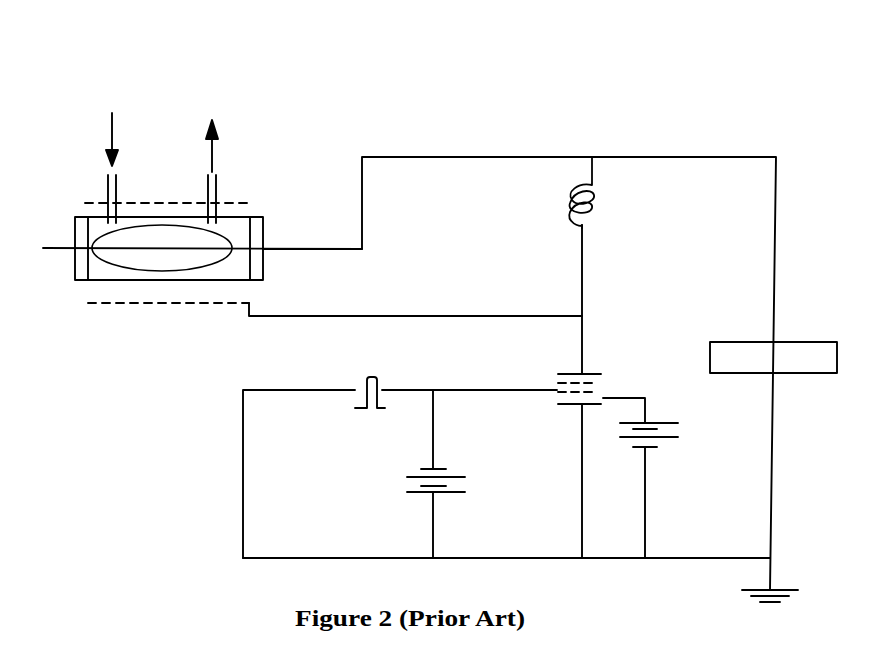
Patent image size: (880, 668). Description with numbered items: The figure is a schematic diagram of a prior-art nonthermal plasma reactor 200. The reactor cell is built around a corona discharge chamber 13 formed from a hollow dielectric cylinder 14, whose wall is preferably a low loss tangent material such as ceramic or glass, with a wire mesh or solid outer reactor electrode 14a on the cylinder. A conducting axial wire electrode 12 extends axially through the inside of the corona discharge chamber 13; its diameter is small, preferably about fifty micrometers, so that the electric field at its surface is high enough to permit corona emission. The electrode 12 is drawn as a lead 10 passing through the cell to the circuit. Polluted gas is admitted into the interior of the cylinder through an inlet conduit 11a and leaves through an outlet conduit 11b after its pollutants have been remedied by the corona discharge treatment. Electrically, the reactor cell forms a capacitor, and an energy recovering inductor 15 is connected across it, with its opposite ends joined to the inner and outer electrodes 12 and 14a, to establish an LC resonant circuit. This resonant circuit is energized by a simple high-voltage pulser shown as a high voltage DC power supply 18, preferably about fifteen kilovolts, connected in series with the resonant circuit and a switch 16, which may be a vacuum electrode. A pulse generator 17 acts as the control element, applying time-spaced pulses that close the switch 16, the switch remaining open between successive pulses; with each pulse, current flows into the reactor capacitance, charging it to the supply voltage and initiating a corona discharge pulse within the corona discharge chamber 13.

The nonthermal plasma reactor 200 is at (345, 107).
The electrical lead 10 is at (307, 252).
The inlet conduit 11a is at (117, 157).
The outlet conduit 11b is at (229, 157).
The conducting axial wire electrode 12 is at (65, 250).
The corona discharge chamber 13 is at (125, 255).
The hollow dielectric cylinder 14 is at (162, 282).
The outer reactor electrode 14a is at (115, 307).
The energy recovering inductor 15 is at (598, 207).
The switch 16 is at (598, 378).
The pulse generator 17 is at (358, 384).
The high voltage power supply 18 is at (750, 352).